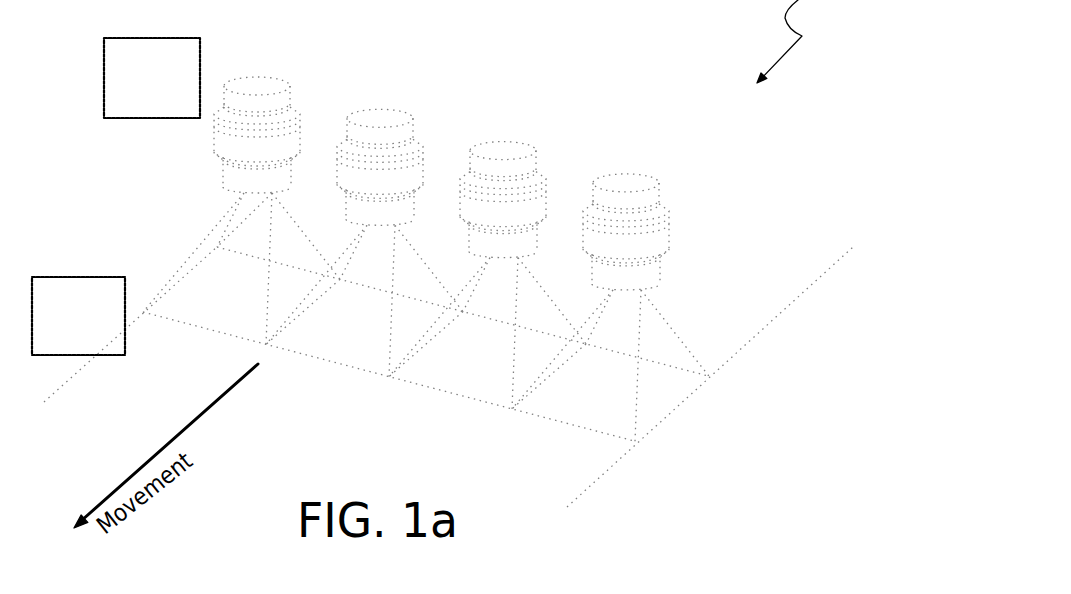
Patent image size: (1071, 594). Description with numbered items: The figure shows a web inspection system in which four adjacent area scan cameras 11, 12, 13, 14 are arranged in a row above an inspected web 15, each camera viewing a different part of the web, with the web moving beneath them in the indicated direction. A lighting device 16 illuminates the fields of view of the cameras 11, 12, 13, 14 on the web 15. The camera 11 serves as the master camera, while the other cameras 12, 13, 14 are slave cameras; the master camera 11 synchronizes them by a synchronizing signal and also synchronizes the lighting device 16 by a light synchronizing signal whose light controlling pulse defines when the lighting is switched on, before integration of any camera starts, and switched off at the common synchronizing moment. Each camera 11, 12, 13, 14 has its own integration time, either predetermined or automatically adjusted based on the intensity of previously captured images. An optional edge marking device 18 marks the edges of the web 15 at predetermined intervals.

The master camera 11 is at (290, 135).
The slave camera 12 is at (413, 168).
The slave camera 13 is at (538, 202).
The slave camera 14 is at (622, 219).
The inspected web 15 is at (784, 255).
The lighting device 16 is at (152, 78).
The edge marking device 18 is at (78, 316).